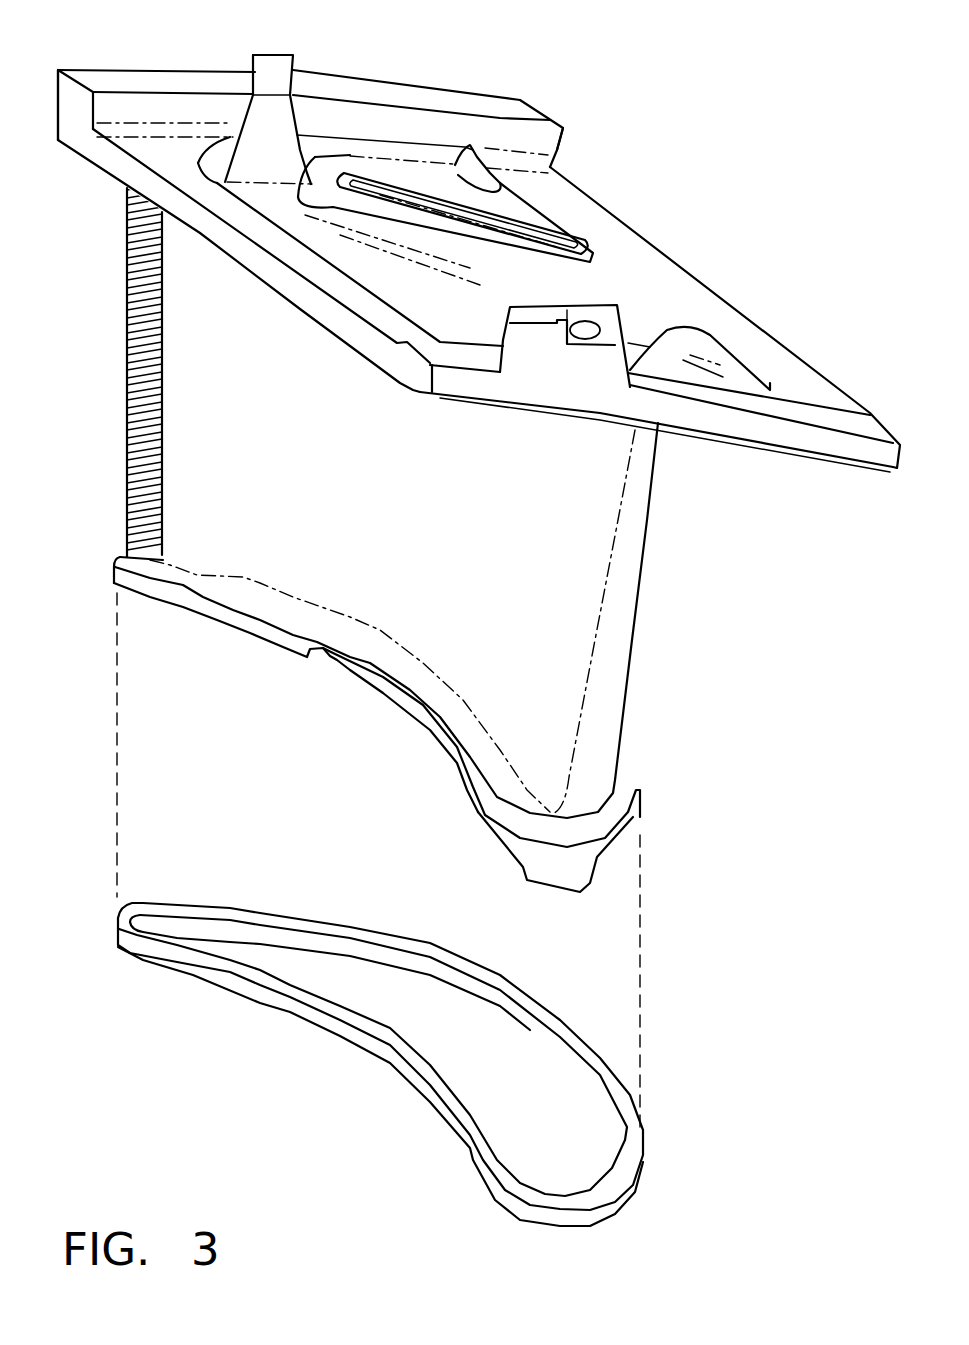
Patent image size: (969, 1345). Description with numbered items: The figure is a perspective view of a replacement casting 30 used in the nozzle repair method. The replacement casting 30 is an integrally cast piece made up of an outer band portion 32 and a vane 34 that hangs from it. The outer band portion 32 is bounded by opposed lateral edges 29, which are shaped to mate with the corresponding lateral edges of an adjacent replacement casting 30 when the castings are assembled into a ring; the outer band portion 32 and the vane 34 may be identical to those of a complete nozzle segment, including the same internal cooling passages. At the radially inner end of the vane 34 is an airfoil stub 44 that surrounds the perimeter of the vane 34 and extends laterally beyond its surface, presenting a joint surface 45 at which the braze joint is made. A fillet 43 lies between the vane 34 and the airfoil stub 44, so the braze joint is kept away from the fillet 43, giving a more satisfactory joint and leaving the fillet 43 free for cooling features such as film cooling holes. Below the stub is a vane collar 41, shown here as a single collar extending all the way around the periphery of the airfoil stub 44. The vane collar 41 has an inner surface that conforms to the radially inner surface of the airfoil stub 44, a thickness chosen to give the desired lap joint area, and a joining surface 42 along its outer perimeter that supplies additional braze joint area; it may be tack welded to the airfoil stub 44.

The lateral edges 29 is at (67, 103).
The replacement casting 30 is at (718, 165).
The outer band portion 32 is at (670, 281).
The vane 34 is at (307, 470).
The vane collar 41 is at (243, 1060).
The joining surface 42 is at (615, 1188).
The fillet 43 is at (620, 768).
The airfoil stub 44 is at (282, 675).
The joint surface 45 is at (560, 868).